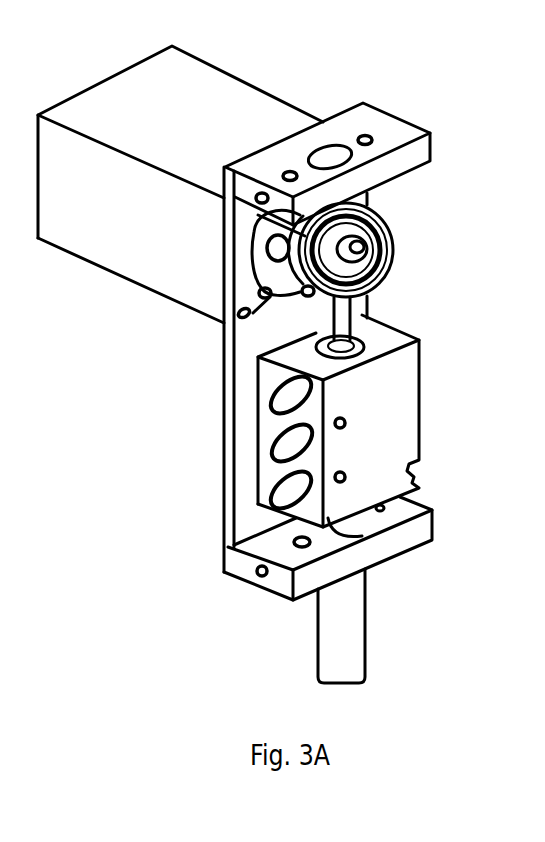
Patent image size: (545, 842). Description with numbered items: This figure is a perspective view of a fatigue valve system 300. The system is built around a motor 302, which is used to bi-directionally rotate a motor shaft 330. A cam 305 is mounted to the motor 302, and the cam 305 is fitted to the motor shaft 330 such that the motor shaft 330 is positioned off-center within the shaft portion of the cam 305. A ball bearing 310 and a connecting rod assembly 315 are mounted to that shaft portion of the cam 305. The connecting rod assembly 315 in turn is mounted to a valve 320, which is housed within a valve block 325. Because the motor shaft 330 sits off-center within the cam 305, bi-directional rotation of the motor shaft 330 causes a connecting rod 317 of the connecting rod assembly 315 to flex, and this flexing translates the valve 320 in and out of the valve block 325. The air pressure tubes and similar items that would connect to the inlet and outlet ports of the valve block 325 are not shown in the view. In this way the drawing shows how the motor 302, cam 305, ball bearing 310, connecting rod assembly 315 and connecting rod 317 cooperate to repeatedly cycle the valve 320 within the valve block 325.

The fatigue valve system 300 is at (424, 79).
The motor 302 is at (228, 88).
The connecting rod assembly 315 is at (300, 393).
The connecting rod 317 is at (260, 357).
The ball bearing 310 is at (391, 217).
The cam 305 is at (392, 242).
The motor shaft 330 is at (384, 258).
The valve 320 is at (360, 347).
The valve block 325 is at (400, 418).